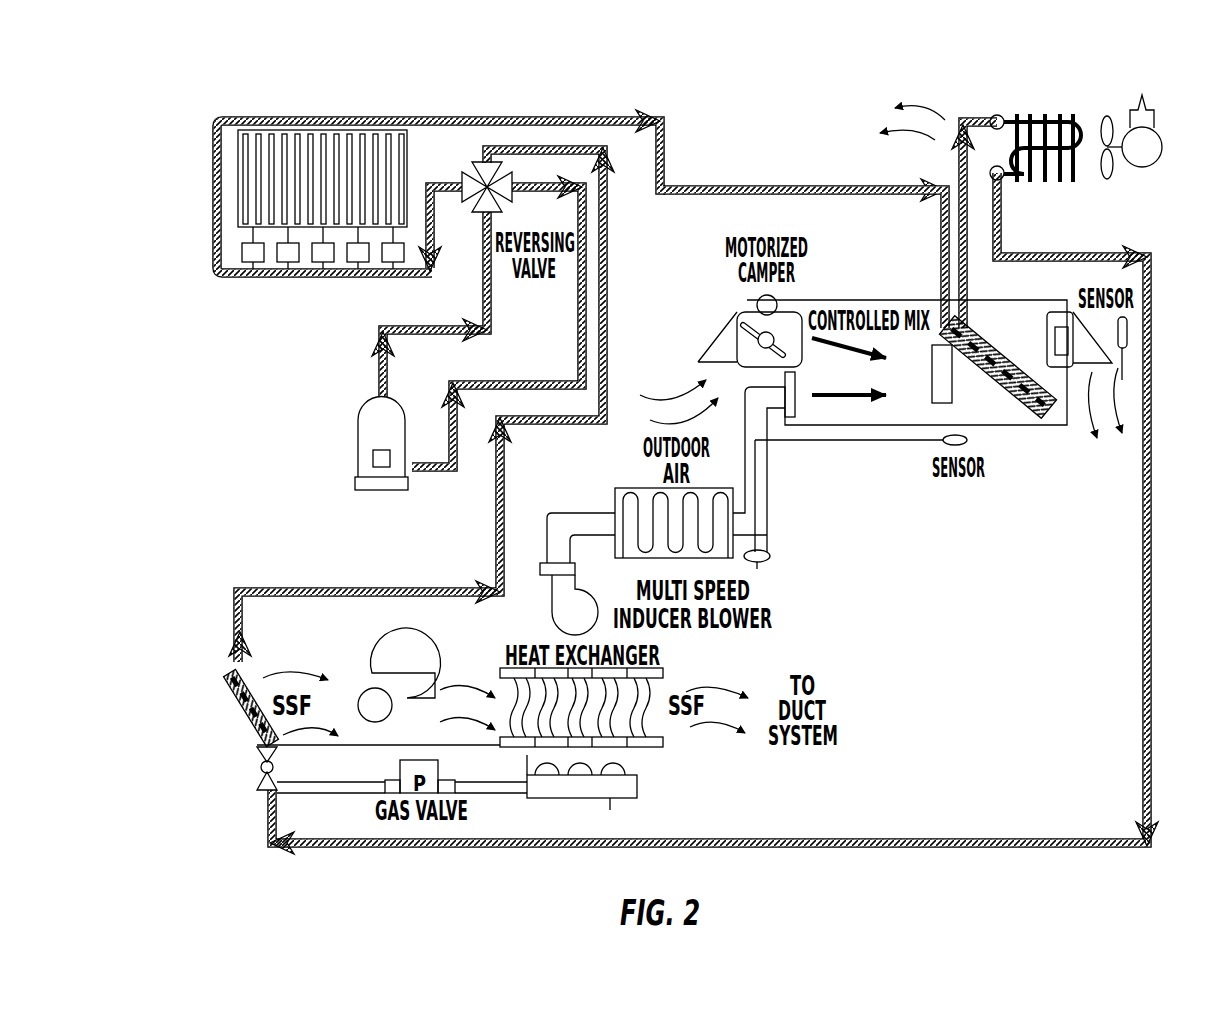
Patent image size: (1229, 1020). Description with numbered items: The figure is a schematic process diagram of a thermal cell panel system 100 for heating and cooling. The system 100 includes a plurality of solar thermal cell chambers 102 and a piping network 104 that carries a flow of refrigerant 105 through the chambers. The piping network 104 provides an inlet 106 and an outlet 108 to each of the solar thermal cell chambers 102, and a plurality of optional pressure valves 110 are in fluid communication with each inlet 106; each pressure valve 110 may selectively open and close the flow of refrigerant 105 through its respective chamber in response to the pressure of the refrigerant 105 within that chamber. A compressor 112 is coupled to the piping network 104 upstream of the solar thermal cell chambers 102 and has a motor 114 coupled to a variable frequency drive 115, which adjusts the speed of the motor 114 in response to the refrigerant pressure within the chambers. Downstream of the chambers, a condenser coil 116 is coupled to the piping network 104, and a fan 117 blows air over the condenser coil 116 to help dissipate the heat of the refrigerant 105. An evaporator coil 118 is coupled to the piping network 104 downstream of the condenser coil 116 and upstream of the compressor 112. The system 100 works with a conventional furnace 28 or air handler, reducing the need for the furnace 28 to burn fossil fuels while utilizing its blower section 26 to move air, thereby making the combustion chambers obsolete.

The thermal cell panel system 100 is at (708, 52).
The solar thermal cell chambers 102 is at (276, 199).
The piping network 104 is at (274, 269).
The refrigerant 105 is at (733, 186).
The inlet 106 is at (242, 230).
The outlet 108 is at (262, 140).
The pressure valves 110 is at (392, 258).
The compressor 112 is at (416, 430).
The motor 114 is at (408, 490).
The variable frequency drive 115 is at (390, 452).
The condenser coil 116 is at (1043, 118).
The fan 117 is at (1147, 127).
The evaporator coil 118 is at (250, 718).
The blower section 26 is at (372, 738).
The furnace 28 is at (612, 800).